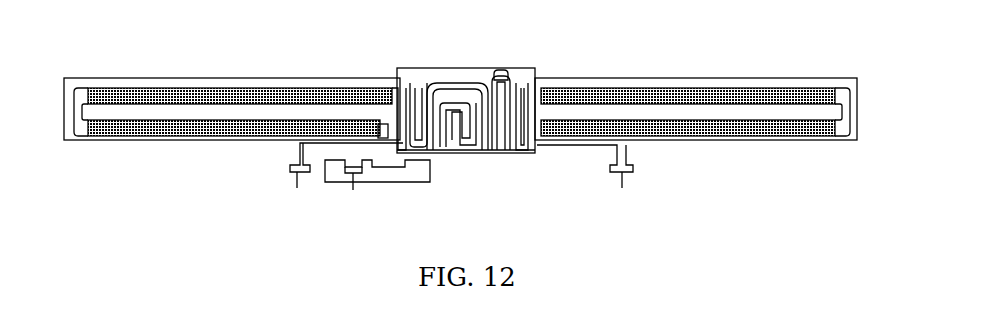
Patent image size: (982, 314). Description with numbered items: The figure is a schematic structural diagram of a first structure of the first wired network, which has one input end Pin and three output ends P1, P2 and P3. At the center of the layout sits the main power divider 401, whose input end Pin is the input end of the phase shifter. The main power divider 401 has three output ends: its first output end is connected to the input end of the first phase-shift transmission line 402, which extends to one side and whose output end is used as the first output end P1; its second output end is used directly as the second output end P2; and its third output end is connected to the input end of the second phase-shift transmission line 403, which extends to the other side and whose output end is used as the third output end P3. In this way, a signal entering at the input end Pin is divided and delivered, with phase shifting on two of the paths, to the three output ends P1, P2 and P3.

The main power divider 401 is at (463, 93).
The first phase-shift transmission line 402 is at (696, 91).
The second phase-shift transmission line 403 is at (232, 91).
The input end Pin is at (500, 72).
The first output end P1 is at (592, 186).
The second output end P2 is at (377, 194).
The third output end P3 is at (342, 185).